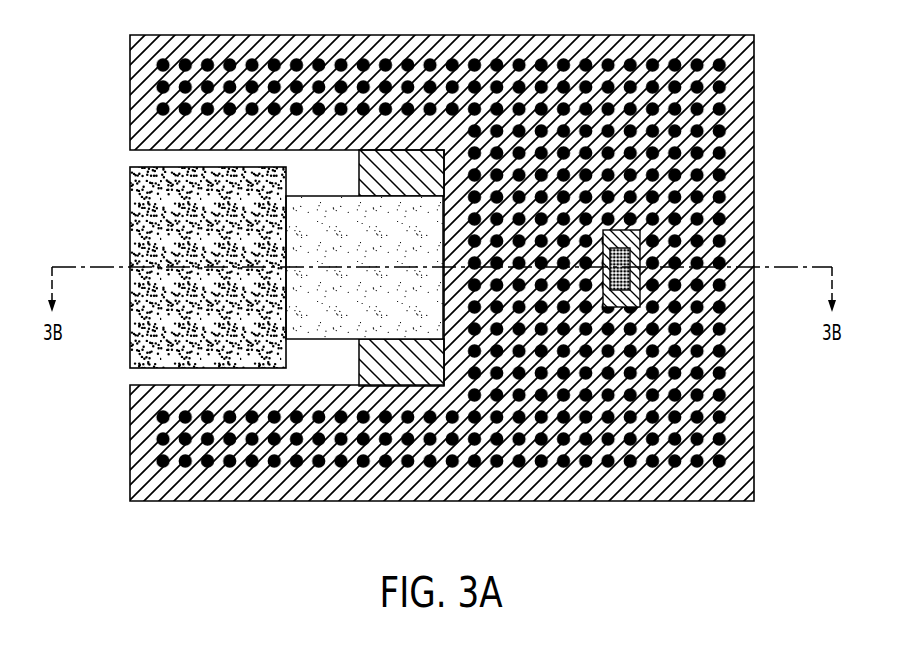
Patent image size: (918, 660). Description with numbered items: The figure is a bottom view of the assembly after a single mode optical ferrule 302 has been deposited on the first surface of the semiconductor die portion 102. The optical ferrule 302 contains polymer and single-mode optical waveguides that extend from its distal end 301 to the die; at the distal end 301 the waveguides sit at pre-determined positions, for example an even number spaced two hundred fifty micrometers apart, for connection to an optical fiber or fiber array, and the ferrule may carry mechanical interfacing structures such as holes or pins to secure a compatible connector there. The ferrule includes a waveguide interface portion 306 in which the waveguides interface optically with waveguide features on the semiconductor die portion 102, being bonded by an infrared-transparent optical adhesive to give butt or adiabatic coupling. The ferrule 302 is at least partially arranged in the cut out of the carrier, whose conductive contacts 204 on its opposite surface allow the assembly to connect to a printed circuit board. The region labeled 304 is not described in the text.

The semiconductor die portion 102 is at (377, 352).
The conductive contacts 204 is at (352, 462).
The distal end 301 is at (115, 352).
The single mode optical ferrule 302 is at (112, 226).
The filler block 304 is at (325, 210).
The waveguide interface portion 306 is at (418, 210).